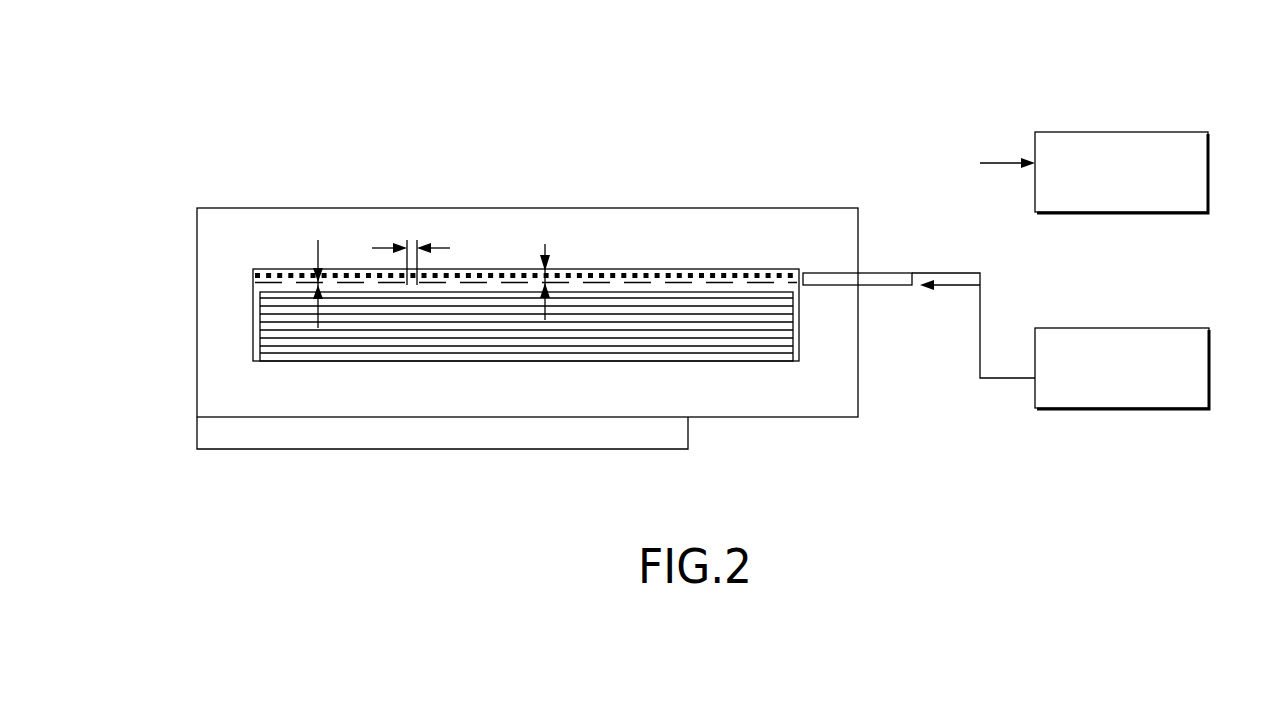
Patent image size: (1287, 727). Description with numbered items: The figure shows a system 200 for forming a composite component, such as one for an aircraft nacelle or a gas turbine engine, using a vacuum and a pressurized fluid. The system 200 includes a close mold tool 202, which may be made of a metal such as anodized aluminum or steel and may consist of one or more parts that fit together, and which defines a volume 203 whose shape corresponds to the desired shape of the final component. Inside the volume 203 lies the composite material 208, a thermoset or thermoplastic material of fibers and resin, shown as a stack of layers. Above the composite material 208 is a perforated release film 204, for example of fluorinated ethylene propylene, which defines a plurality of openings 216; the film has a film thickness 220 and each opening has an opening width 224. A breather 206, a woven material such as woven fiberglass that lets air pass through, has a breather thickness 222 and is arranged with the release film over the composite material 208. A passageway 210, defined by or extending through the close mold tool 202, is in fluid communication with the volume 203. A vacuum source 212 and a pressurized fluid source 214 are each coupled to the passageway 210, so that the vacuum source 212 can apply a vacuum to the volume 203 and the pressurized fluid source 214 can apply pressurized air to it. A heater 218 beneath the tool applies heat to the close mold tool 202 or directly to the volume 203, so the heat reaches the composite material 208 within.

The system 200 is at (374, 86).
The close mold tool 202 is at (719, 216).
The volume 203 is at (650, 277).
The perforated release film 204 is at (258, 288).
The breather 206 is at (268, 275).
The composite material 208 is at (745, 346).
The passageway 210 is at (868, 277).
The vacuum source 212 is at (1210, 150).
The pressurized fluid source 214 is at (1210, 360).
The plurality of openings 216 is at (289, 265).
The heater 218 is at (485, 450).
The film thickness 220 is at (319, 246).
The breather thickness 222 is at (545, 245).
The opening width 224 is at (448, 247).